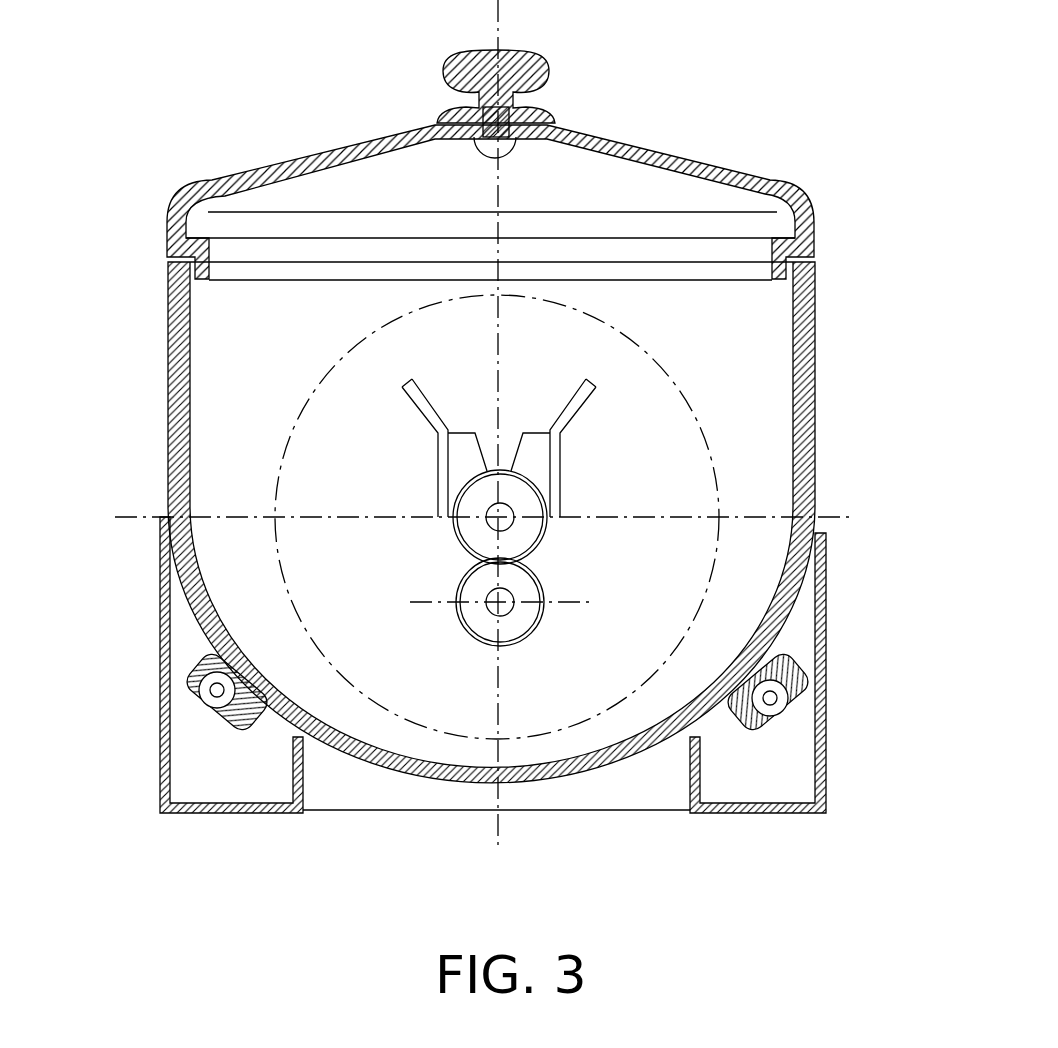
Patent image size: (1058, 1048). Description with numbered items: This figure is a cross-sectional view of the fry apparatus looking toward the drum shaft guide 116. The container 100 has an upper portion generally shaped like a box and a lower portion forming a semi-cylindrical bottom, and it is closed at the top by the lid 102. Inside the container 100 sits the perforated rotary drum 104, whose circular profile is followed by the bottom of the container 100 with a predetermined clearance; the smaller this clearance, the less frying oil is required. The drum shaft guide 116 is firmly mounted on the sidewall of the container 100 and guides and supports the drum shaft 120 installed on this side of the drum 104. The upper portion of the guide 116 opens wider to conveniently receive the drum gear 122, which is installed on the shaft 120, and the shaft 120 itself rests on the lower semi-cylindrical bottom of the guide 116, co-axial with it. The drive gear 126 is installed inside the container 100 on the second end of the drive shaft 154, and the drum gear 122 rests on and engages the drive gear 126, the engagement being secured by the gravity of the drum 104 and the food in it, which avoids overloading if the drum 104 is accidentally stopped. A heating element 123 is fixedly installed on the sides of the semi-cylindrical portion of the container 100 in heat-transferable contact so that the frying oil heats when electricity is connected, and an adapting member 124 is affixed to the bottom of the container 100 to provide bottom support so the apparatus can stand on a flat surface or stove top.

The container 100 is at (170, 437).
The lid 102 is at (330, 153).
The perforated rotary drum 104 is at (702, 437).
The drum shaft guide 116 is at (447, 470).
The drum shaft 120 is at (548, 518).
The drum gear 122 is at (487, 521).
The drive gear 126 is at (487, 608).
The drive shaft 154 is at (553, 607).
The adapting member 124 is at (188, 700).
The heating element 123 is at (797, 702).